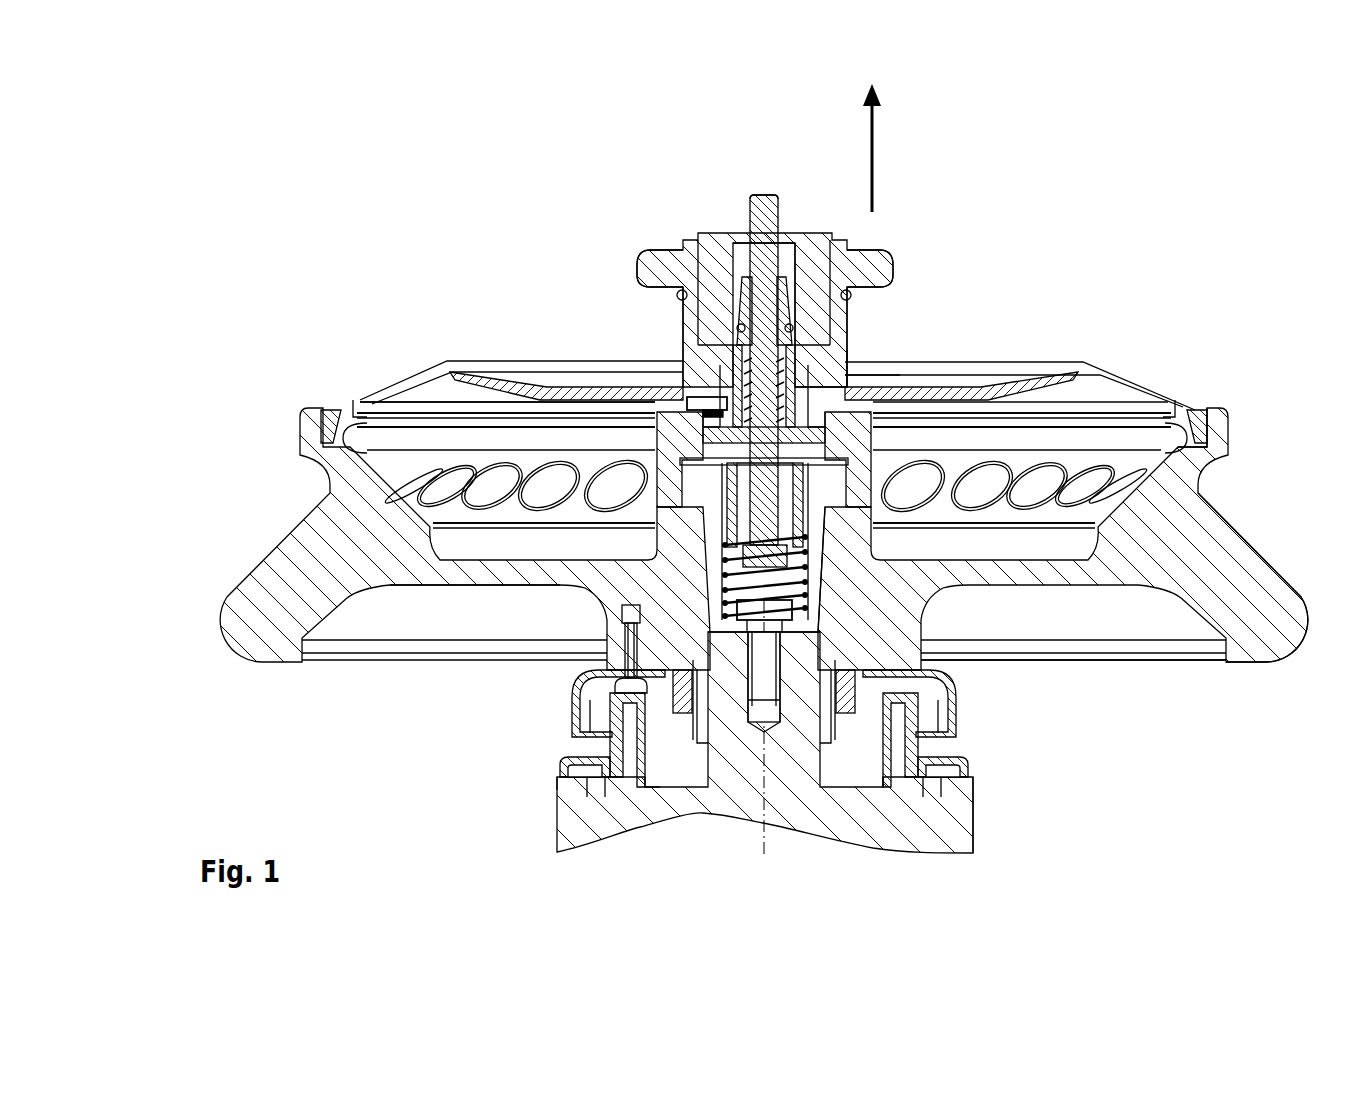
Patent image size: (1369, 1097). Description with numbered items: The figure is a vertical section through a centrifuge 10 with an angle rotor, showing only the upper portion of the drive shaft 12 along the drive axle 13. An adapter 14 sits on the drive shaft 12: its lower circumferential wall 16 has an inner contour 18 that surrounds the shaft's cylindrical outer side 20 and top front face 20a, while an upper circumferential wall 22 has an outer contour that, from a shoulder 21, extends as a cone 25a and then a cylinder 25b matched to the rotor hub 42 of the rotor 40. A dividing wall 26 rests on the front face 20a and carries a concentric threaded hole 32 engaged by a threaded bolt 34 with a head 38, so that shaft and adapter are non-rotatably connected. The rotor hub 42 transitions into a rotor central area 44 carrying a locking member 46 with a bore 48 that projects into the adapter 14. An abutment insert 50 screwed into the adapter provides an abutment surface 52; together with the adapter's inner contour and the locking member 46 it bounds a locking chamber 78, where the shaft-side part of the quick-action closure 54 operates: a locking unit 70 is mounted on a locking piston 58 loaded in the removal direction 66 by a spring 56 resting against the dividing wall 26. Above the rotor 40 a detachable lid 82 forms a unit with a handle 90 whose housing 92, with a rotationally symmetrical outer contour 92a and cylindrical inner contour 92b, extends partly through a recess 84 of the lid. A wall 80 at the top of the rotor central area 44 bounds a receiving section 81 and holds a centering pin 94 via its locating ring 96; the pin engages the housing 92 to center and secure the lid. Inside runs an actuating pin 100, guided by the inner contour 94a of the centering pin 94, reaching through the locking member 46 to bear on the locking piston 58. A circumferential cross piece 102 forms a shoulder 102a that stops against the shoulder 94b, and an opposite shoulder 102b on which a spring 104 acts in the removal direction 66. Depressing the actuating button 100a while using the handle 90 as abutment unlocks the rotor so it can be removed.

The centrifuge 10 is at (284, 107).
The drive shaft 12 is at (773, 790).
The drive axle 13 is at (762, 827).
The adapter 14 is at (1072, 610).
The lower circumferential wall 16 is at (970, 837).
The inner contour 18 is at (820, 790).
The cylindrical outer side 20 is at (970, 770).
The top front face 20a is at (960, 712).
The shoulder 21 is at (957, 717).
The upper circumferential wall 22 is at (1063, 658).
The cone 25a is at (940, 690).
The cylinder 25b is at (1178, 438).
The dividing wall 26 is at (575, 697).
The concentric threaded hole 32 is at (560, 760).
The threaded bolt 34 is at (647, 782).
The head 38 is at (737, 648).
The rotor 40 is at (373, 540).
The rotor hub 42 is at (540, 605).
The rotor central area 44 is at (827, 428).
The locking member 46 is at (1085, 362).
The bore 48 is at (870, 374).
The abutment insert 50 is at (1165, 410).
The abutment surface 52 is at (1190, 493).
The quick-action closure 54 is at (352, 400).
The spring 56 is at (1197, 597).
The locking piston 58 is at (879, 612).
The removal direction 66 is at (859, 144).
The locking unit 70 is at (655, 506).
The locking chamber 78 is at (640, 575).
The wall 80 is at (721, 522).
The receiving section 81 is at (695, 408).
The lid 82 is at (621, 450).
The recess 84 is at (769, 431).
The handle 90 is at (523, 210).
The housing 92 is at (665, 255).
The rotationally symmetrical outer contour 92a is at (655, 283).
The cylindrical inner contour 92b is at (790, 249).
The centering pin 94 is at (690, 240).
The inner contour 94a is at (672, 300).
The shoulder 94b is at (703, 383).
The locating ring 96 is at (450, 362).
The actuating pin 100 is at (700, 232).
The actuating button 100a is at (748, 232).
The circumferential cross piece 102 is at (847, 313).
The shoulder 102a is at (893, 270).
The shoulder 102b is at (852, 360).
The spring 104 is at (762, 331).